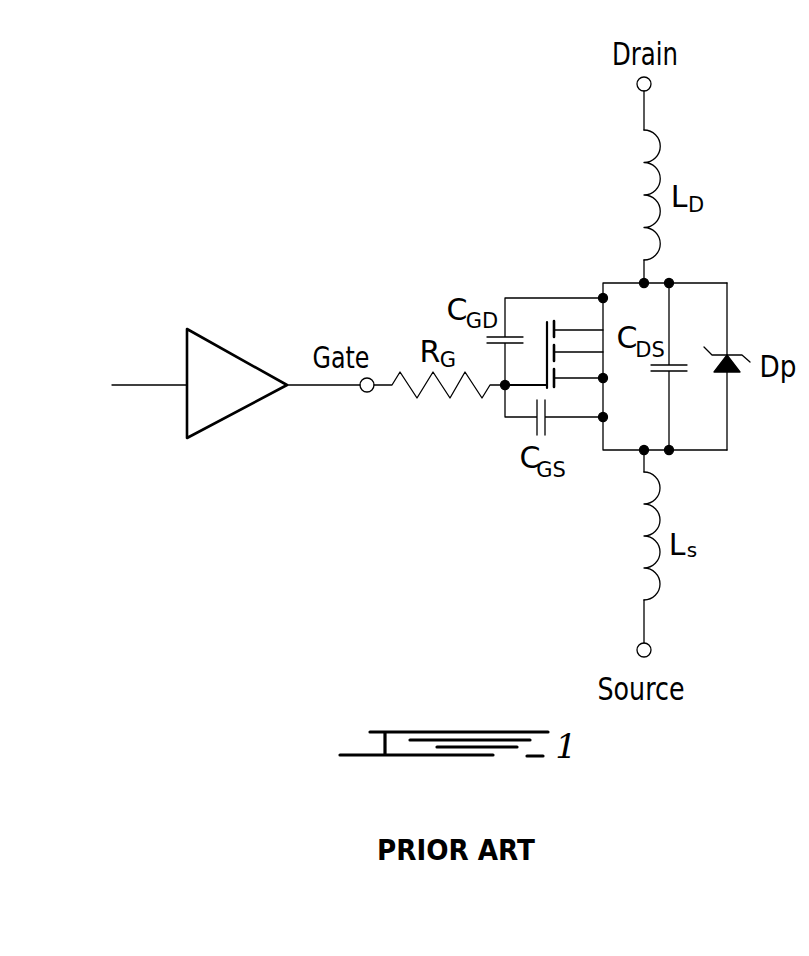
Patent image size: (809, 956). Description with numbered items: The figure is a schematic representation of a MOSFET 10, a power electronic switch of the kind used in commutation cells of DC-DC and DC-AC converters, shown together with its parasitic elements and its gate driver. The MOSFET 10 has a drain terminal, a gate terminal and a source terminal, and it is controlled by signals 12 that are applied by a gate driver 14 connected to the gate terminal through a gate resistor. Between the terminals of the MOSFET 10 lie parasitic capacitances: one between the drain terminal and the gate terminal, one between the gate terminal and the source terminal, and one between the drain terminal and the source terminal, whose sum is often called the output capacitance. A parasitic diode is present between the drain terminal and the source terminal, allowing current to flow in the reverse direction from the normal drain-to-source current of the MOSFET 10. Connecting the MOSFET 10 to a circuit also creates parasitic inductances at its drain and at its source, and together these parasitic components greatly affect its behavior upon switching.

The MOSFET 10 is at (578, 323).
The signals 12 is at (143, 386).
The gate driver 14 is at (237, 347).